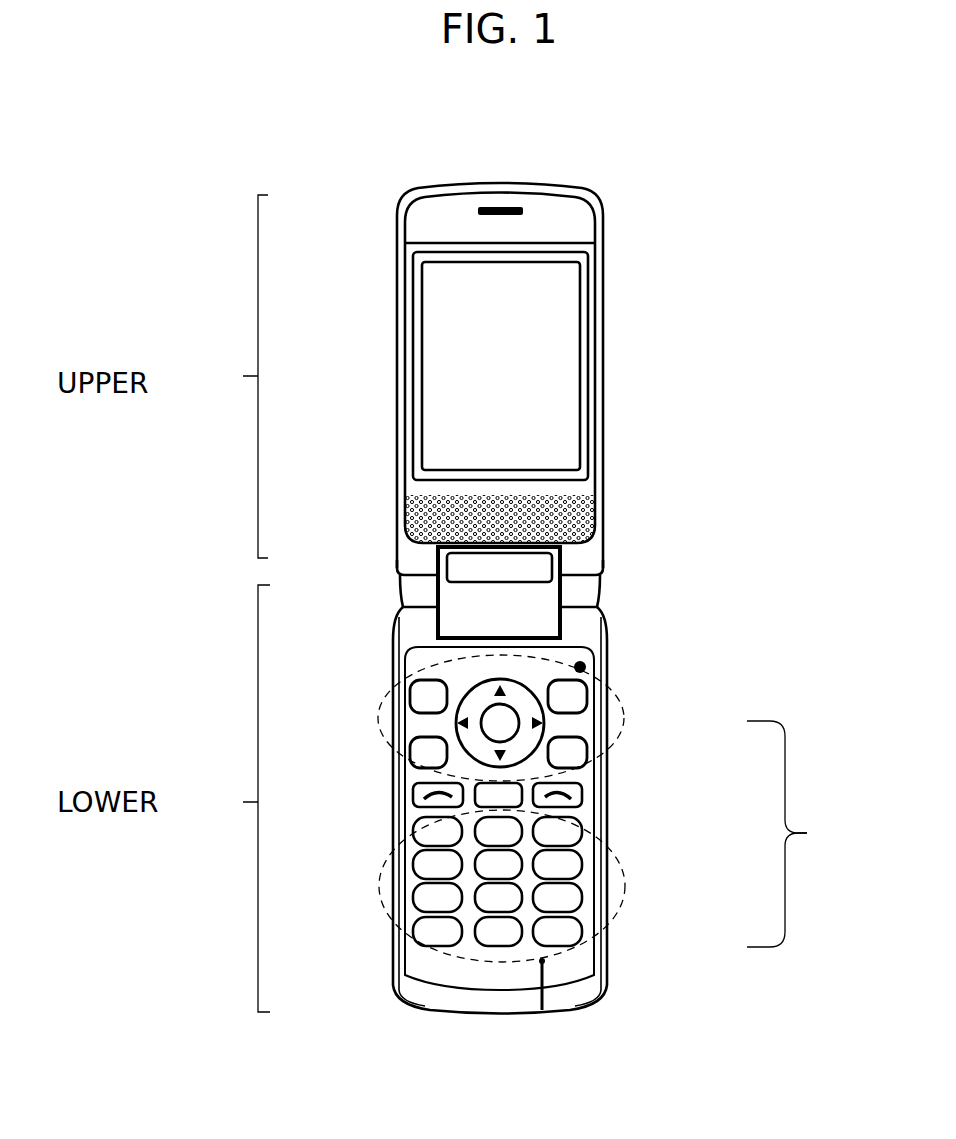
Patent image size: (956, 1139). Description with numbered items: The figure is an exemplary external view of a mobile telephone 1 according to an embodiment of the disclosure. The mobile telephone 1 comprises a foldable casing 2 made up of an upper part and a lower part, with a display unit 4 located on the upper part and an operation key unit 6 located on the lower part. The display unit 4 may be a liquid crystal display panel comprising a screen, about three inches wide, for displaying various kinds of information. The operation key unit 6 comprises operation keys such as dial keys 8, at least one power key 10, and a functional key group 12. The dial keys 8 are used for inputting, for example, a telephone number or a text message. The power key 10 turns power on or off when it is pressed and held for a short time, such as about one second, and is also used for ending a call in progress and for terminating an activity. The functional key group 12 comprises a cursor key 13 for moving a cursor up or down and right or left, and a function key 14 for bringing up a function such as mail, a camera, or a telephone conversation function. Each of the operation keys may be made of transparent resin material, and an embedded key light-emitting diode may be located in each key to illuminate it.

The mobile telephone 1 is at (491, 132).
The foldable casing 2 is at (352, 584).
The display unit 4 is at (455, 375).
The operation key unit 6 is at (788, 834).
The dial keys 8 is at (620, 904).
The power key 10 is at (578, 800).
The functional key group 12 is at (628, 742).
The cursor key 13 is at (586, 665).
The function key 14 is at (505, 723).